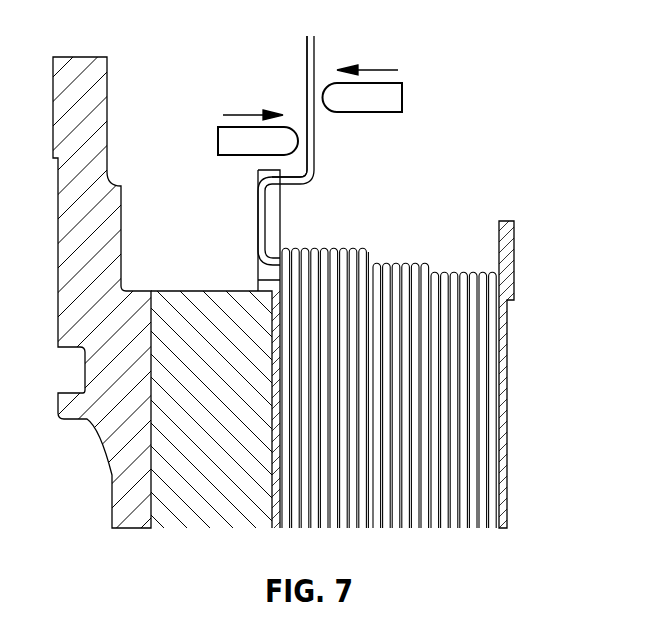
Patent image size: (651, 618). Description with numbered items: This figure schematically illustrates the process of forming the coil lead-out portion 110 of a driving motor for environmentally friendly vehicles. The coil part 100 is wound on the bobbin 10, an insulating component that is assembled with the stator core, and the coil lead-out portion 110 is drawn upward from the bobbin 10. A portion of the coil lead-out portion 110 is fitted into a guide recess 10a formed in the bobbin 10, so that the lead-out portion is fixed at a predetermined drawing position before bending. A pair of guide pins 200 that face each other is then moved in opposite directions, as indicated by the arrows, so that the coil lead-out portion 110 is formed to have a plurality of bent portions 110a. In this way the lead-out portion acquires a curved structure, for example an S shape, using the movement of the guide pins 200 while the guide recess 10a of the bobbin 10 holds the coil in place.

The bobbin 10 is at (505, 290).
The guide recess 10a is at (263, 220).
The coil part 100 is at (418, 268).
The coil lead-out portion 110 is at (274, 245).
The bent portion 110a is at (300, 182).
The guide pin 200 is at (218, 141).